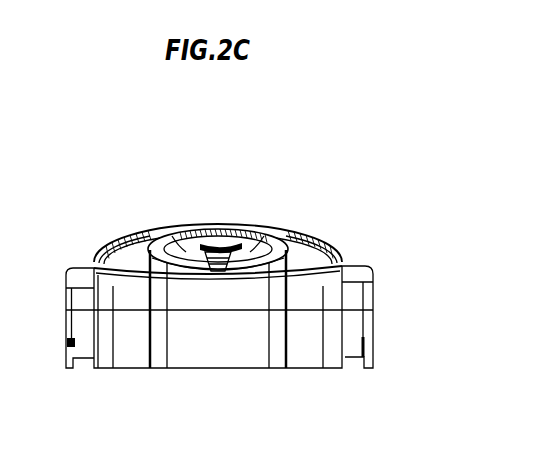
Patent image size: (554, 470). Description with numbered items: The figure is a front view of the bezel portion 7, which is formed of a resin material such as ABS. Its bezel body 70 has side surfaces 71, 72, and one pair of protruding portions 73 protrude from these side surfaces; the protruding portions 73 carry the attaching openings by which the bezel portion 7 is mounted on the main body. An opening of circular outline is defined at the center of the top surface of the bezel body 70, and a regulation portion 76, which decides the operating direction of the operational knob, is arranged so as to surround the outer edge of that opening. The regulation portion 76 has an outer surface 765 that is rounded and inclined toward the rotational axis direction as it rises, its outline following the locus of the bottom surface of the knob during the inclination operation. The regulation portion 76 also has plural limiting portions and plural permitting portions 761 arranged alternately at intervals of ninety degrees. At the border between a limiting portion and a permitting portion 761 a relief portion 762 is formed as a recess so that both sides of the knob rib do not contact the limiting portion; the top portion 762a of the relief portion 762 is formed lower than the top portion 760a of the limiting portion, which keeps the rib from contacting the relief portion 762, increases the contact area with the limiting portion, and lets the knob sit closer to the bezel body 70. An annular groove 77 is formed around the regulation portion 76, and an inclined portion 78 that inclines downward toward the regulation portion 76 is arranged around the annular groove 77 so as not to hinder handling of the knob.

The bezel portion 7 is at (370, 158).
The bezel body 70 is at (128, 353).
The side surface 71 is at (93, 266).
The side surface 72 is at (347, 262).
The protruding portion 73 is at (80, 321).
The regulation portion 76 is at (272, 228).
The permitting portion 761 is at (183, 250).
The relief portion 762 is at (216, 234).
The top portion of the relief portion 762a is at (239, 236).
The outer surface 765 is at (263, 262).
The top portion of the limiting portion 760a is at (253, 250).
The annular groove 77 is at (148, 262).
The inclined portion 78 is at (132, 255).